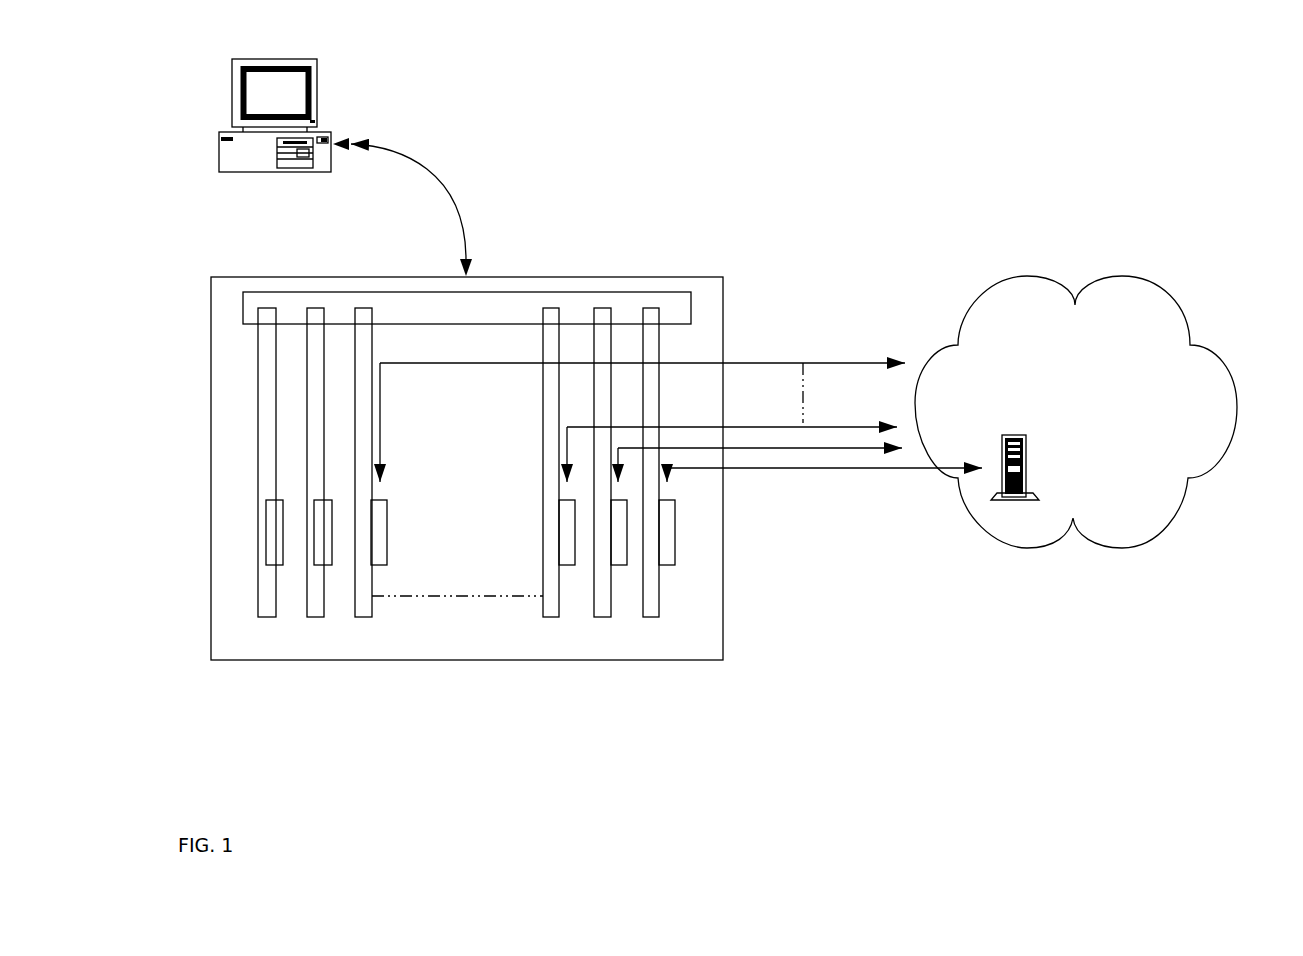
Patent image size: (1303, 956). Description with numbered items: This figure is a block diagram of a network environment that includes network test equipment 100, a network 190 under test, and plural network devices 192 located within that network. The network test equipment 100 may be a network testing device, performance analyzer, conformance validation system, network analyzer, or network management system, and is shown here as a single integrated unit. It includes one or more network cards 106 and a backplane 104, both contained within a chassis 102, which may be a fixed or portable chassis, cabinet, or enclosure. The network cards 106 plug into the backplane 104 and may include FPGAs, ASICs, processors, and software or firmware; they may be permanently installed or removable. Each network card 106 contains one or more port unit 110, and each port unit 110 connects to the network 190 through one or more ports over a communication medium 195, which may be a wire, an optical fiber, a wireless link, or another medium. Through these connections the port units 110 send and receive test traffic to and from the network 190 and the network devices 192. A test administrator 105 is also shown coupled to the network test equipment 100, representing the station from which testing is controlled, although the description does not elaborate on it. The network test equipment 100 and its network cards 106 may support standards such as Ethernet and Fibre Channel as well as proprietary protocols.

The network test equipment 100 is at (660, 80).
The chassis 102 is at (579, 277).
The backplane 104 is at (643, 292).
The test administrator 105 is at (333, 167).
The network cards 106 is at (243, 618).
The port unit 110 is at (668, 565).
The network 190 is at (1076, 412).
The network devices 192 is at (1026, 470).
The communication medium 195 is at (786, 469).